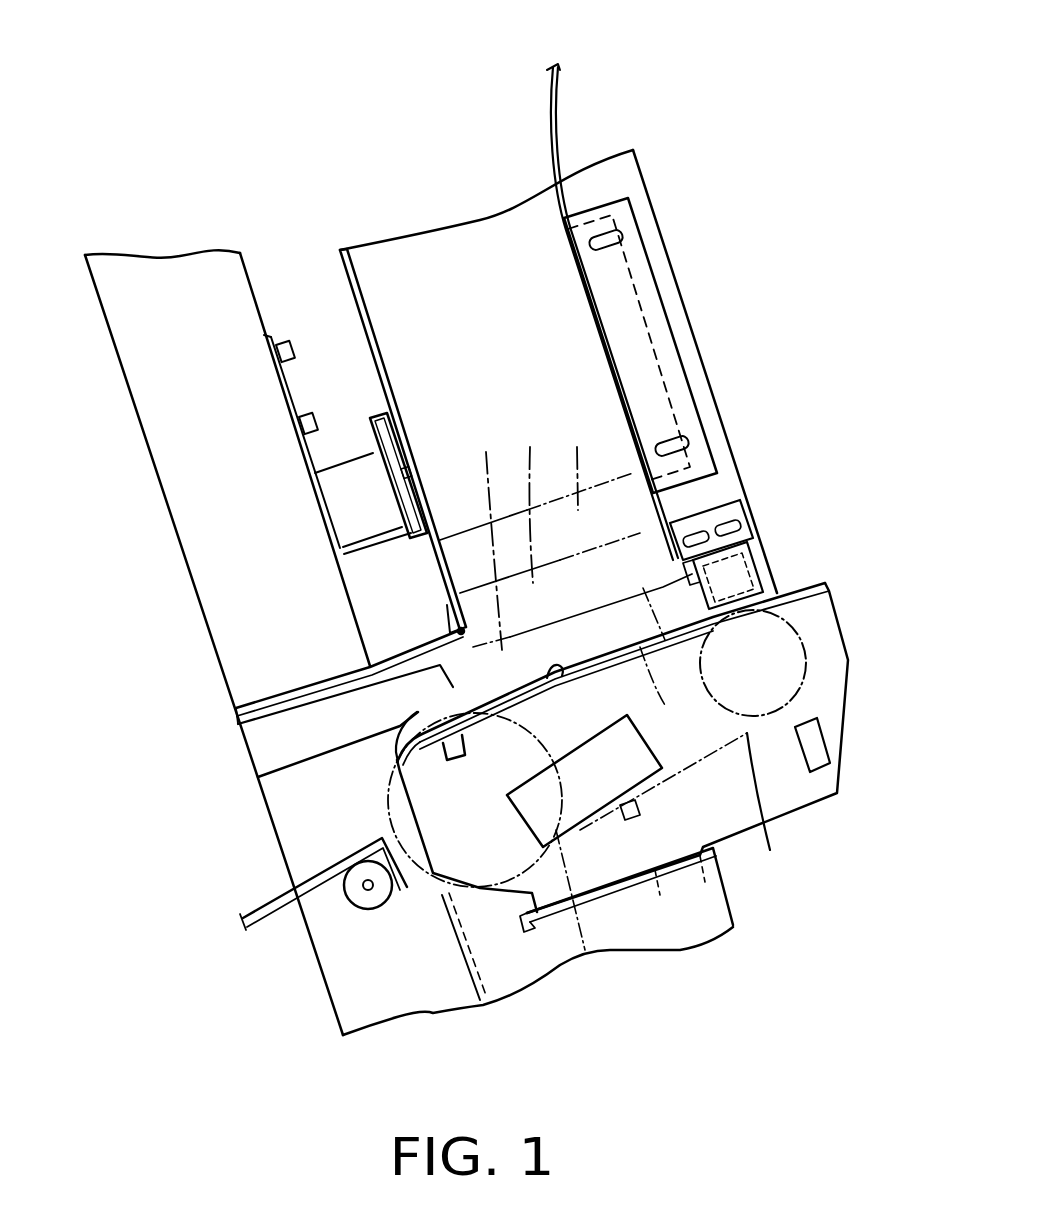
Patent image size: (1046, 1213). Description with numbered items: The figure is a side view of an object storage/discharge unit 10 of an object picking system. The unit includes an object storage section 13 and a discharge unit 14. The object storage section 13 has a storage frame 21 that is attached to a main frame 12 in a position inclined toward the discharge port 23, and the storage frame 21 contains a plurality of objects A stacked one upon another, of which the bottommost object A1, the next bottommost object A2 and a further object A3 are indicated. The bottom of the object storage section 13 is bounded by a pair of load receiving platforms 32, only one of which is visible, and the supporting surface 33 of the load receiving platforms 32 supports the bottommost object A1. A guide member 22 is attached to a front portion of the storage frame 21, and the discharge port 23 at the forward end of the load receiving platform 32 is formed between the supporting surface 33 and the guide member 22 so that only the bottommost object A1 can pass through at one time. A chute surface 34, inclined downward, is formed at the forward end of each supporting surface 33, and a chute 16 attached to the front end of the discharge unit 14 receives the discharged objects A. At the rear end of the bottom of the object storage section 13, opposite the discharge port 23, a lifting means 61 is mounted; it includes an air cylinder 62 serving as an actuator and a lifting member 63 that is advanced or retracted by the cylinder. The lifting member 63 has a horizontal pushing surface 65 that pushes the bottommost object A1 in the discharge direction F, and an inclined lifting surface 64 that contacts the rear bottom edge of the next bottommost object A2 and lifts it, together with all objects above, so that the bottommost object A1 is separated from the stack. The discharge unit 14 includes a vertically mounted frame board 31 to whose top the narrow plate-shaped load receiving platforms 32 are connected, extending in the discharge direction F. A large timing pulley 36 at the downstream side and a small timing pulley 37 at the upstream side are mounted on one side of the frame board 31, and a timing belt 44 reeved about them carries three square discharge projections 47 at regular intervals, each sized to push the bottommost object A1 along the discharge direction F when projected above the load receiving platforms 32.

The object storage/discharge unit 10 is at (335, 124).
The main frame 12 is at (137, 413).
The object storage section 13 is at (416, 275).
The discharge unit 14 is at (868, 618).
The chute 16 is at (243, 915).
The storage frame 21 is at (347, 291).
The guide member 22 is at (243, 708).
The discharge port 23 is at (413, 673).
The frame board 31 is at (838, 780).
The load receiving platform 32 is at (647, 662).
The supporting surface 33 is at (558, 680).
The chute surface 34 is at (395, 752).
The large timing pulley 36 is at (585, 950).
The small timing pulley 37 is at (802, 790).
The timing belt 44 is at (765, 805).
The discharge projection 47 is at (815, 597).
The lifting means 61 is at (786, 519).
The air cylinder 62 is at (770, 560).
The lifting member 63 is at (716, 624).
The inclined lifting surface 64 is at (688, 546).
The horizontal pushing surface 65 is at (683, 600).
The objects A is at (600, 427).
The bottommost object A1 is at (487, 536).
The next bottommost object A2 is at (536, 503).
The ink ribbon region A3 is at (581, 466).
The discharge direction F is at (417, 692).